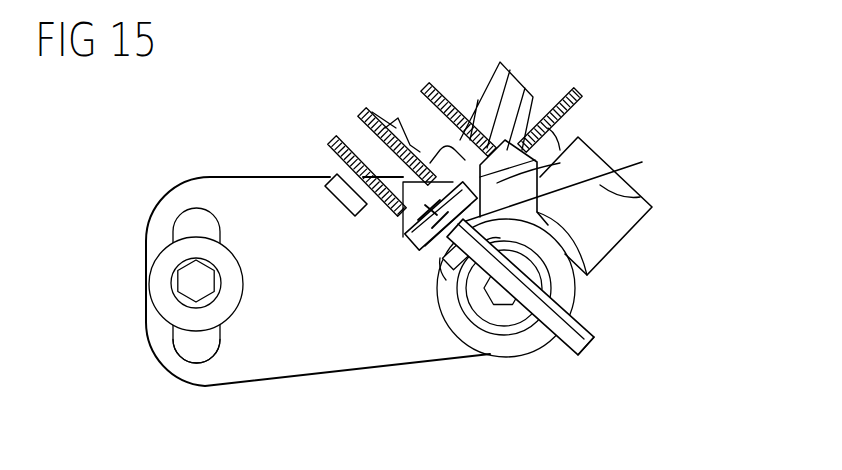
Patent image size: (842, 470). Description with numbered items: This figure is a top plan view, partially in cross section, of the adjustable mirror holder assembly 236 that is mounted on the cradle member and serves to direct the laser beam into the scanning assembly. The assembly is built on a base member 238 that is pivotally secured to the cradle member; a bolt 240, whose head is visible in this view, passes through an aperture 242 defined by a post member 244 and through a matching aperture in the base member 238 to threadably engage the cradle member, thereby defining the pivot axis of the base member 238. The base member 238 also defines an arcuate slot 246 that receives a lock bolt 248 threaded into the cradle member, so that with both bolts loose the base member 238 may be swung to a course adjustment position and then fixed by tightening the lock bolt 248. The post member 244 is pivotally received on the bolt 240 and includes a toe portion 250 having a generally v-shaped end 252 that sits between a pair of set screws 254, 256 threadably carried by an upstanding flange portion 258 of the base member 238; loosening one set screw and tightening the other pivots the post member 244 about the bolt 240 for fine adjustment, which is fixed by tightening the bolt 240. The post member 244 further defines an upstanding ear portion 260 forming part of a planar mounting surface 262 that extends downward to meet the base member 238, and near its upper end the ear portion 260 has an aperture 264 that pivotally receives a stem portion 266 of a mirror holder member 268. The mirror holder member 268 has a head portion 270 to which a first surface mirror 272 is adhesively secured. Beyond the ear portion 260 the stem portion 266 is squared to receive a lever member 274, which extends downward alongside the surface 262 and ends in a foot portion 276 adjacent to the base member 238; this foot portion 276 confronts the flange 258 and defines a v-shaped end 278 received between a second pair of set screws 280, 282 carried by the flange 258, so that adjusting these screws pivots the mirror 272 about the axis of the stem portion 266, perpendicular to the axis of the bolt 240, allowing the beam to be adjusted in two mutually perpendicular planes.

The adjustable mirror holder assembly 236 is at (500, 400).
The base member 238 is at (352, 357).
The bolt 240 is at (543, 228).
The aperture 242 is at (583, 275).
The post member 244 is at (545, 227).
The arcuate slot 246 is at (210, 358).
The lock bolt 248 is at (174, 291).
The toe portion 250 is at (575, 140).
The v-shaped end 252 is at (523, 98).
The set screw 254 is at (577, 100).
The set screw 256 is at (440, 88).
The upstanding flange portion 258 is at (627, 193).
The upstanding ear portion 260 is at (430, 263).
The planar mounting surface 262 is at (412, 242).
The aperture 264 is at (630, 164).
The stem portion 266 is at (408, 210).
The mirror holder member 268 is at (563, 305).
The head portion 270 is at (577, 332).
The first surface mirror 272 is at (572, 350).
The lever member 274 is at (585, 124).
The foot portion 276 is at (425, 177).
The v-shaped end 278 is at (363, 130).
The set screw 280 is at (332, 143).
The set screw 282 is at (365, 110).